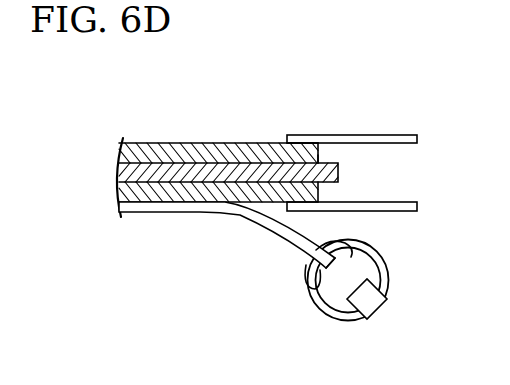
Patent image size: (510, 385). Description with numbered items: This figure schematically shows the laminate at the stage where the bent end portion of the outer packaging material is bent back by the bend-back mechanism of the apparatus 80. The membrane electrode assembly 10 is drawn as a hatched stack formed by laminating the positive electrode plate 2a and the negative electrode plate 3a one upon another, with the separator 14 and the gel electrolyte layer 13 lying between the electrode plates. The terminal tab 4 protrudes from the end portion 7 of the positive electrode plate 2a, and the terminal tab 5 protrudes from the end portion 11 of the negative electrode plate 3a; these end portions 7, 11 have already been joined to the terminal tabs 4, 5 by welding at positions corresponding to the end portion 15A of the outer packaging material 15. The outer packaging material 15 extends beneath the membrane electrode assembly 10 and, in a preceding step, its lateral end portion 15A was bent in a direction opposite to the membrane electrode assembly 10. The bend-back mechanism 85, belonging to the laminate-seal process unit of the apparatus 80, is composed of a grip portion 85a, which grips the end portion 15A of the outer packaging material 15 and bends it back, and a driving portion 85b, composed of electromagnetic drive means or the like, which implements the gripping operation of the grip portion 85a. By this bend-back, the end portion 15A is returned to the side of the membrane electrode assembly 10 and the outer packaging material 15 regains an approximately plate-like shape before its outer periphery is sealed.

The membrane electrode assembly 10 is at (254, 157).
The positive electrode plate 2a is at (146, 150).
The separator 14 is at (167, 170).
The gel electrolyte layer 13 is at (228, 172).
The end portion of the positive electrode plate 7 is at (302, 142).
The terminal tab 4 is at (385, 138).
The terminal tab 5 is at (405, 210).
The end portion of the negative electrode plate 11 is at (306, 203).
The negative electrode plate 3a is at (188, 198).
The outer packaging material 15 is at (225, 271).
The end portion of the outer packaging material 15A is at (312, 280).
The bend-back mechanism 85 is at (320, 320).
The apparatus 80 is at (290, 303).
The grip portion 85a is at (310, 241).
The driving portion 85b is at (378, 308).